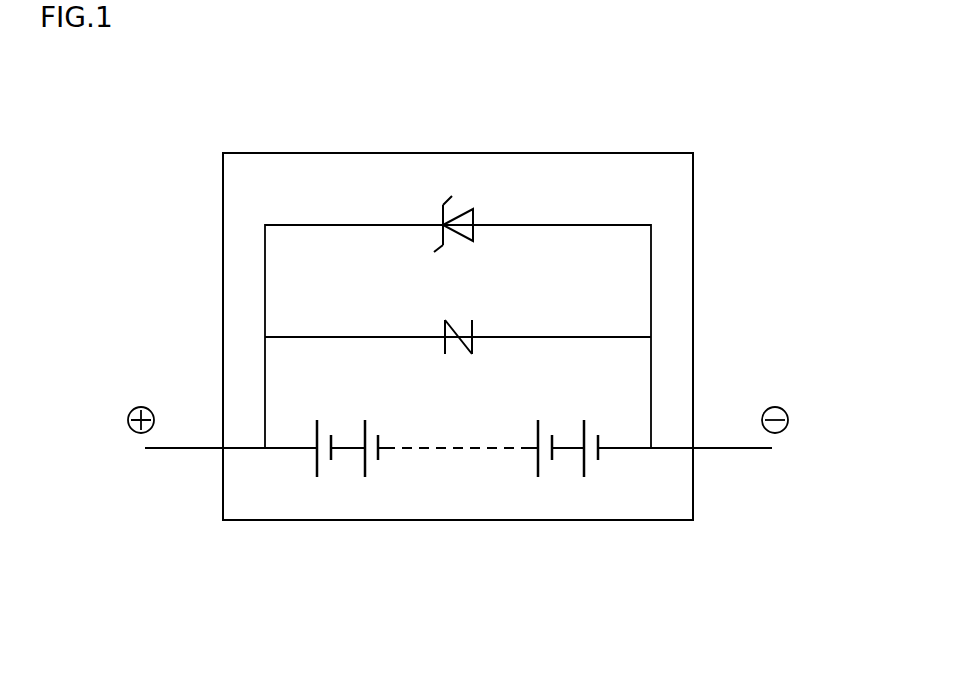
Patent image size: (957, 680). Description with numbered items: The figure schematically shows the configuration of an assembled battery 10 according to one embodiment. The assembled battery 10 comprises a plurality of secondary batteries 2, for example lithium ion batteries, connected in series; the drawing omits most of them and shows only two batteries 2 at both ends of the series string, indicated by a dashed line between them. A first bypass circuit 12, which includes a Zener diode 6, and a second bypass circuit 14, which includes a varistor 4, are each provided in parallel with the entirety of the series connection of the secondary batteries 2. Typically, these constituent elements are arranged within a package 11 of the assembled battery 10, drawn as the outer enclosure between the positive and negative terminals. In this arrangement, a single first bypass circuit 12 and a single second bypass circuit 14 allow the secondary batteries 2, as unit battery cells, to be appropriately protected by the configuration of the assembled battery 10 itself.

The assembled battery 10 is at (718, 178).
The package 11 is at (620, 153).
The first bypass circuit 12 is at (317, 225).
The second bypass circuit 14 is at (606, 337).
The Zener diode 6 is at (478, 210).
The varistor 4 is at (478, 322).
The secondary batteries 2 is at (371, 478).